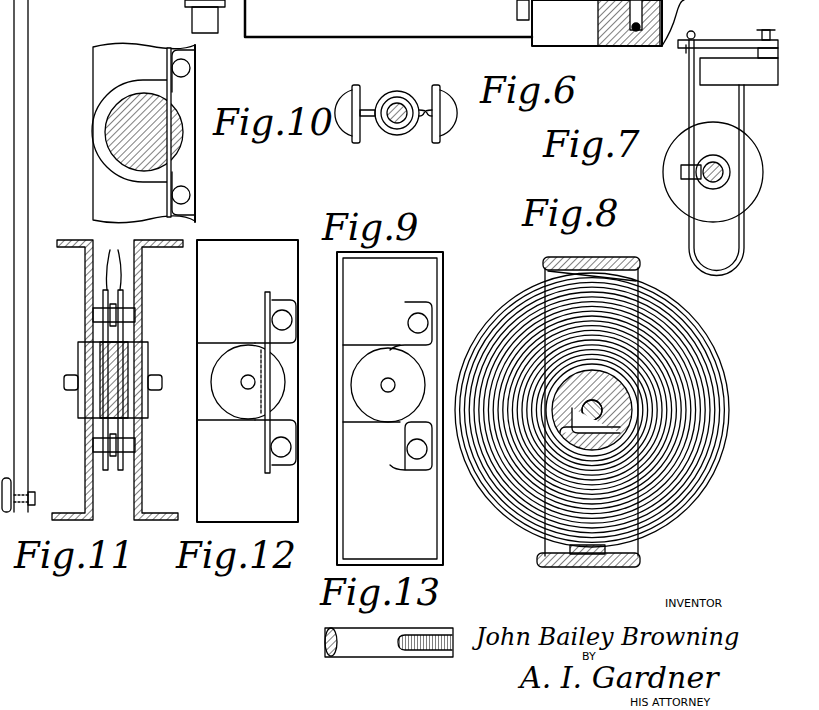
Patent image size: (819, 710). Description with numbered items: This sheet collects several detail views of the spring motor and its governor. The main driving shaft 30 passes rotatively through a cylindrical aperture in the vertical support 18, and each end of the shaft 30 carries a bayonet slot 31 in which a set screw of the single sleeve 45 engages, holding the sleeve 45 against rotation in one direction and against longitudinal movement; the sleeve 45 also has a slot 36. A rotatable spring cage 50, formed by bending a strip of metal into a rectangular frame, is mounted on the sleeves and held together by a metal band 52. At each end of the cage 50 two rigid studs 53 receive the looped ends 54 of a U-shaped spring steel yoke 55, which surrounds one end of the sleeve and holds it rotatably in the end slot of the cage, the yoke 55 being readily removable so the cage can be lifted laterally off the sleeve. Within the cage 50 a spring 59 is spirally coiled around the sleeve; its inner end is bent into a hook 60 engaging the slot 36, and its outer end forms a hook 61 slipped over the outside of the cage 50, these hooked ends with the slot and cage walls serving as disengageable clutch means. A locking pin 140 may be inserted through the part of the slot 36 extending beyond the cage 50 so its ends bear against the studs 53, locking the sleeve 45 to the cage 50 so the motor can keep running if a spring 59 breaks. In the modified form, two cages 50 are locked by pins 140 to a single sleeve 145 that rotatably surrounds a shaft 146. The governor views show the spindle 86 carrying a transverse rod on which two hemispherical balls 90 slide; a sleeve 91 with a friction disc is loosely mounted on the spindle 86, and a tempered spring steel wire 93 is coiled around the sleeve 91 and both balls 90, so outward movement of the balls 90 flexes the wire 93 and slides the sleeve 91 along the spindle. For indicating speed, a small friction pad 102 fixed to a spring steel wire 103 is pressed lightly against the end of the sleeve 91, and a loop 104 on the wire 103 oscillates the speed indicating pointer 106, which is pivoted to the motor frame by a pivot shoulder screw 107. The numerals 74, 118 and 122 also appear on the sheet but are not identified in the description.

In FIG. 6, the vertical support 18 is at (608, 23).
In FIG. 13, the shaft 30 is at (440, 656).
In FIG. 13, the bayonet slot 31 is at (416, 650).
In FIG. 8, the slot 36 is at (620, 430).
In FIG. 10, the slot 36 is at (178, 118).
In FIG. 8, the single sleeve 45 is at (625, 395).
In FIG. 9, the single sleeve 45 is at (388, 385).
In FIG. 10, the single sleeve 45 is at (180, 142).
In FIG. 8, the spring cage 50 is at (640, 263).
In FIG. 9, the spring cage 50 is at (390, 408).
In FIG. 10, the spring cage 50 is at (100, 62).
In FIG. 11, the spring cage 50 is at (75, 250).
In FIG. 12, the spring cage 50 is at (247, 381).
In FIG. 9, the metal band 52 is at (441, 262).
In FIG. 9, the studs 53 is at (428, 323).
In FIG. 10, the studs 53 is at (185, 68).
In FIG. 11, the studs 53 is at (95, 315).
In FIG. 12, the studs 53 is at (290, 320).
In FIG. 9, the looped ends 54 is at (432, 302).
In FIG. 10, the looped ends 54 is at (196, 50).
In FIG. 12, the looped ends 54 is at (286, 303).
In FIG. 9, the U-shaped spring steel yoke 55 is at (432, 346).
In FIG. 11, the U-shaped spring steel yoke 55 is at (128, 378).
In FIG. 12, the U-shaped spring steel yoke 55 is at (249, 345).
In FIG. 8, the spring 59 is at (690, 342).
In FIG. 8, the hook 60 is at (577, 433).
In FIG. 8, the hook 61 is at (618, 252).
In FIG. 6, the pin 74 is at (507, 10).
In FIG. 6, the governor spindle 86 is at (397, 122).
In FIG. 6, the hemispherical balls 90 is at (345, 122).
In FIG. 6, the sleeve 91 is at (397, 104).
In FIG. 7, the sleeve 91 is at (712, 162).
In FIG. 6, the spring steel wire 93 is at (383, 98).
In FIG. 7, the friction pad 102 is at (681, 170).
In FIG. 7, the spring steel wire 103 is at (738, 263).
In FIG. 7, the loop 104 is at (694, 30).
In FIG. 7, the speed indicating pointer 106 is at (736, 50).
In FIG. 7, the pivot shoulder screw 107 is at (766, 30).
In FIG. 6, the block 118 is at (192, 22).
In FIG. 6, the lever 122 is at (228, 4).
In FIG. 10, the locking pin 140 is at (167, 80).
In FIG. 11, the locking pin 140 is at (114, 348).
In FIG. 12, the locking pin 140 is at (265, 295).
In FIG. 11, the single sleeve 145 is at (140, 405).
In FIG. 11, the shaft 146 is at (74, 378).